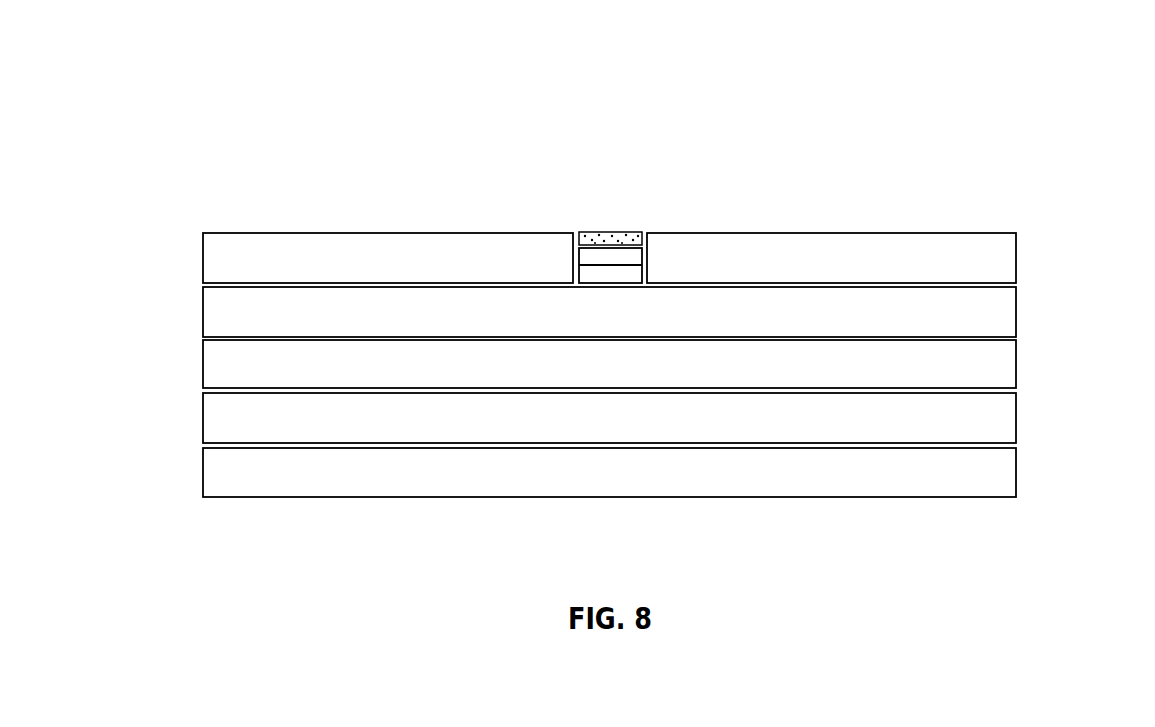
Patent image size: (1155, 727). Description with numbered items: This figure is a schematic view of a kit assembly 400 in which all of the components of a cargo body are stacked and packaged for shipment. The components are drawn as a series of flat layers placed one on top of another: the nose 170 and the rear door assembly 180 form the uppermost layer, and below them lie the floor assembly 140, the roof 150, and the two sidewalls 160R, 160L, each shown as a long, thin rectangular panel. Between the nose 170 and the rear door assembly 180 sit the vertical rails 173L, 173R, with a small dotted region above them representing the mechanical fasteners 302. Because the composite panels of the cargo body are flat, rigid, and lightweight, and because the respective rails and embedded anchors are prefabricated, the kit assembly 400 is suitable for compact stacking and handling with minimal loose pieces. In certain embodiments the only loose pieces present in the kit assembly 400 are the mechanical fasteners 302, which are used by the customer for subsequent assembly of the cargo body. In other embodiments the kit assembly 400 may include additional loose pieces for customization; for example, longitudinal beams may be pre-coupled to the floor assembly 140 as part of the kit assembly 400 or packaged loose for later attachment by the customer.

The kit assembly 400 is at (946, 158).
The nose 170 is at (283, 246).
The rear door assembly 180 is at (1004, 256).
The mechanical fasteners 302 is at (597, 240).
The vertical rail 173L is at (576, 253).
The vertical rail 173R is at (643, 275).
The floor assembly 140 is at (218, 313).
The roof 150 is at (1007, 369).
The sidewall 160R is at (230, 418).
The sidewall 160L is at (1008, 473).